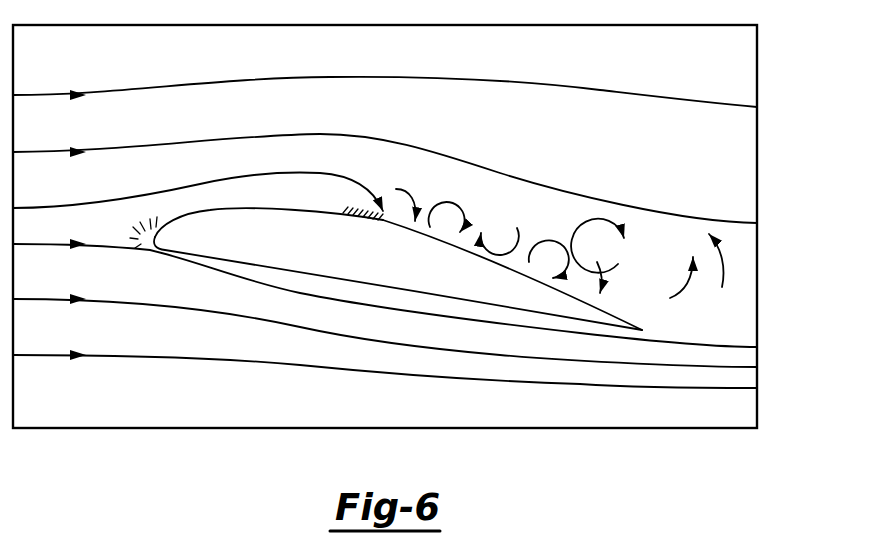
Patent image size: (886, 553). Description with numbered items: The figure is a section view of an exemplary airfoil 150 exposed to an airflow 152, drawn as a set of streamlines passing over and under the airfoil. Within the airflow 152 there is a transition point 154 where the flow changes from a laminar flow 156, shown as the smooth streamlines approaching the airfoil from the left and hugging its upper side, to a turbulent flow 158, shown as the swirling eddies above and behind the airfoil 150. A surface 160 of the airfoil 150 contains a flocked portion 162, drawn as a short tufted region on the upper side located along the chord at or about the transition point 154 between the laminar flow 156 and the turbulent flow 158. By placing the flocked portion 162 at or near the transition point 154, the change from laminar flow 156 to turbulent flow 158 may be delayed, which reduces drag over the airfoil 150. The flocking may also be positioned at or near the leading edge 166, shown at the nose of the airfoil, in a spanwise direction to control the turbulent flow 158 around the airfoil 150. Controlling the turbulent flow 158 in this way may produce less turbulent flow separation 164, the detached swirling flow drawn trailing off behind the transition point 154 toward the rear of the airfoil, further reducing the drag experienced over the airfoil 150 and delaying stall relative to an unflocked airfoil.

The airfoil 150 is at (284, 245).
The airflow 152 is at (88, 134).
The transition point 154 is at (384, 210).
The laminar flow 156 is at (189, 186).
The turbulent flow 158 is at (549, 228).
The surface 160 is at (470, 257).
The flocked portion 162 is at (338, 212).
The turbulent flow separation 164 is at (721, 298).
The leading edge 166 is at (139, 238).